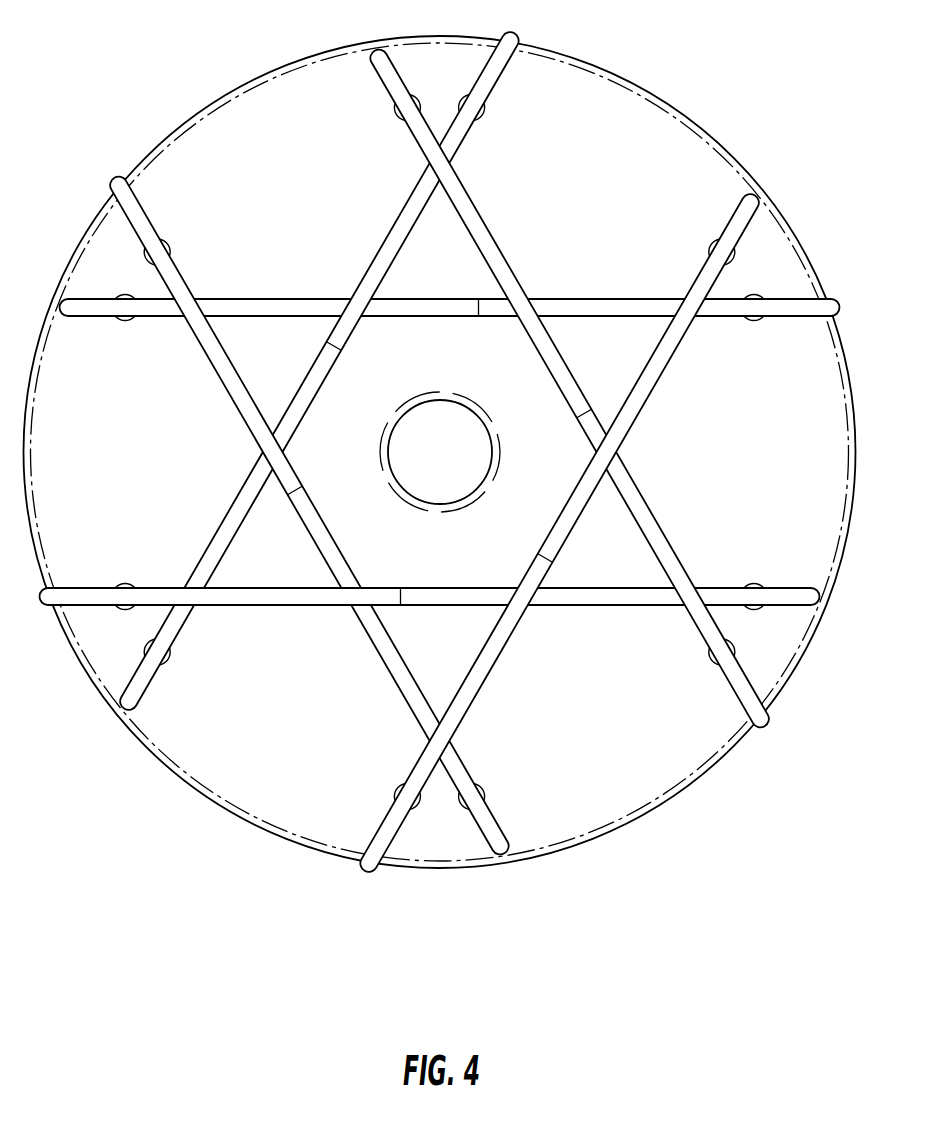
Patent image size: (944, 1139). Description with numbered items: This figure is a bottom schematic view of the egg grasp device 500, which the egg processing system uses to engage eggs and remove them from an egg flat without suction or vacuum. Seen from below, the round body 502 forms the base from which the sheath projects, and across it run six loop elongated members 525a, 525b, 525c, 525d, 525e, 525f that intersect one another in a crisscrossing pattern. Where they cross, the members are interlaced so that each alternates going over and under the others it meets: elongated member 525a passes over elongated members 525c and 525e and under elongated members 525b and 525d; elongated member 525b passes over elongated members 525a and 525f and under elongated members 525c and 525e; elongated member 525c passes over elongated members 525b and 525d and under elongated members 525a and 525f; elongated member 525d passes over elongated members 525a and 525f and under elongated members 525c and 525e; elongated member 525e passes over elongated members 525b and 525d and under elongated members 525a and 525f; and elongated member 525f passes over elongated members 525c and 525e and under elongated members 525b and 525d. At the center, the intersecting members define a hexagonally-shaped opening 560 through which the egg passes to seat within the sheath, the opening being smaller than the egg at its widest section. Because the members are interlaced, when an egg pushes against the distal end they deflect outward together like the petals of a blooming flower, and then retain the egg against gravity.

The egg grasp device 500 is at (79, 75).
The body 502 is at (272, 128).
The opening 560 is at (503, 352).
The elongated member 525a is at (803, 596).
The elongated member 525b is at (648, 506).
The elongated member 525c is at (415, 215).
The elongated member 525d is at (212, 343).
The elongated member 525e is at (483, 667).
The elongated member 525f is at (592, 307).